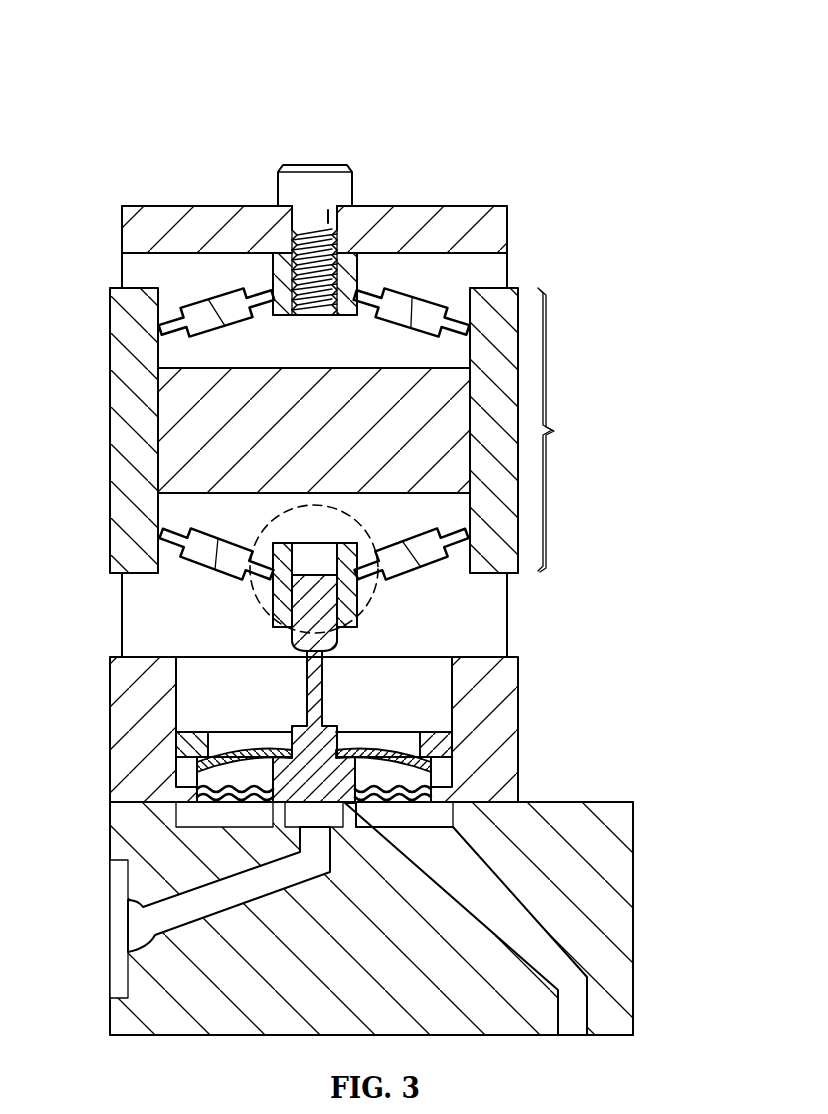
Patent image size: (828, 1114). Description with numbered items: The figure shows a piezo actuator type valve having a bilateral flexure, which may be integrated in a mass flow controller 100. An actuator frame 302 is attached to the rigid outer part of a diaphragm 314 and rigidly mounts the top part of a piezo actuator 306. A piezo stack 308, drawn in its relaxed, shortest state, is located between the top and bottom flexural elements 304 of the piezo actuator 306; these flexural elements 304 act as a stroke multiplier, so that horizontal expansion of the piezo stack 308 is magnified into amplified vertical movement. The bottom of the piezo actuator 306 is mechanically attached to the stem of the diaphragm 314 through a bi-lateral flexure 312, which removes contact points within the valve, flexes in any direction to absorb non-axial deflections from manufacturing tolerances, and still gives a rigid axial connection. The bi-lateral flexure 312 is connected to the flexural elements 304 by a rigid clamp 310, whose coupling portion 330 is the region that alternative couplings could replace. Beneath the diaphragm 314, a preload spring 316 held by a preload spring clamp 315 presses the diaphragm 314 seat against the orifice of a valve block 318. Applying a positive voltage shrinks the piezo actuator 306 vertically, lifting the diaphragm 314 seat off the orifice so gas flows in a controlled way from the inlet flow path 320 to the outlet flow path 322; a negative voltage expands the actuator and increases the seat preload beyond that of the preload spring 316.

The mass flow controller 100 is at (251, 72).
The actuator frame 302 is at (205, 205).
The flexural element 304 is at (379, 285).
The piezo actuator 306 is at (356, 435).
The piezo stack 308 is at (173, 400).
The rigid clamp 310 is at (357, 597).
The bi-lateral flexure 312 is at (323, 677).
The diaphragm 314 is at (519, 742).
The preload spring clamp 315 is at (202, 732).
The preload spring 316 is at (253, 750).
The valve block 318 is at (633, 923).
The inlet flow path 320 is at (215, 897).
The outlet flow path 322 is at (480, 887).
The coupling portion 330 is at (253, 607).